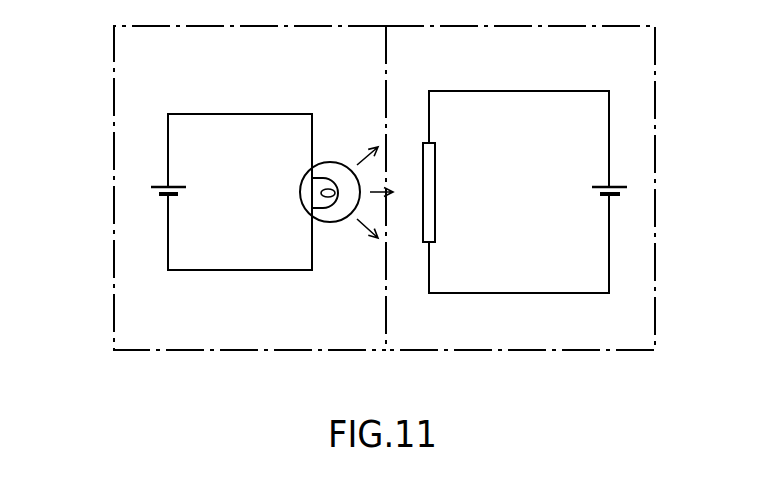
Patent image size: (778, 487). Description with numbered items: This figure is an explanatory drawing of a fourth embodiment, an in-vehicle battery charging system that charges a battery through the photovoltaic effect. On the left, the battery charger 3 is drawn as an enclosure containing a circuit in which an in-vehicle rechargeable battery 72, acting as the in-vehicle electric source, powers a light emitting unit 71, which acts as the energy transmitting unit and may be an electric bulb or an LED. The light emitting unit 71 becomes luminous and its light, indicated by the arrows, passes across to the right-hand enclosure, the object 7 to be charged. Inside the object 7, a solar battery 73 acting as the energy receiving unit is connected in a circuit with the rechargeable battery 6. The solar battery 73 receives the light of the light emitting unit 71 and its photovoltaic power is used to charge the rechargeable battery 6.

The battery charger 3 is at (114, 266).
The object to be charged 7 is at (655, 54).
The in-vehicle rechargeable battery 72 is at (150, 190).
The light emitting unit 71 is at (330, 162).
The solar battery 73 is at (436, 166).
The rechargeable battery 6 is at (625, 190).